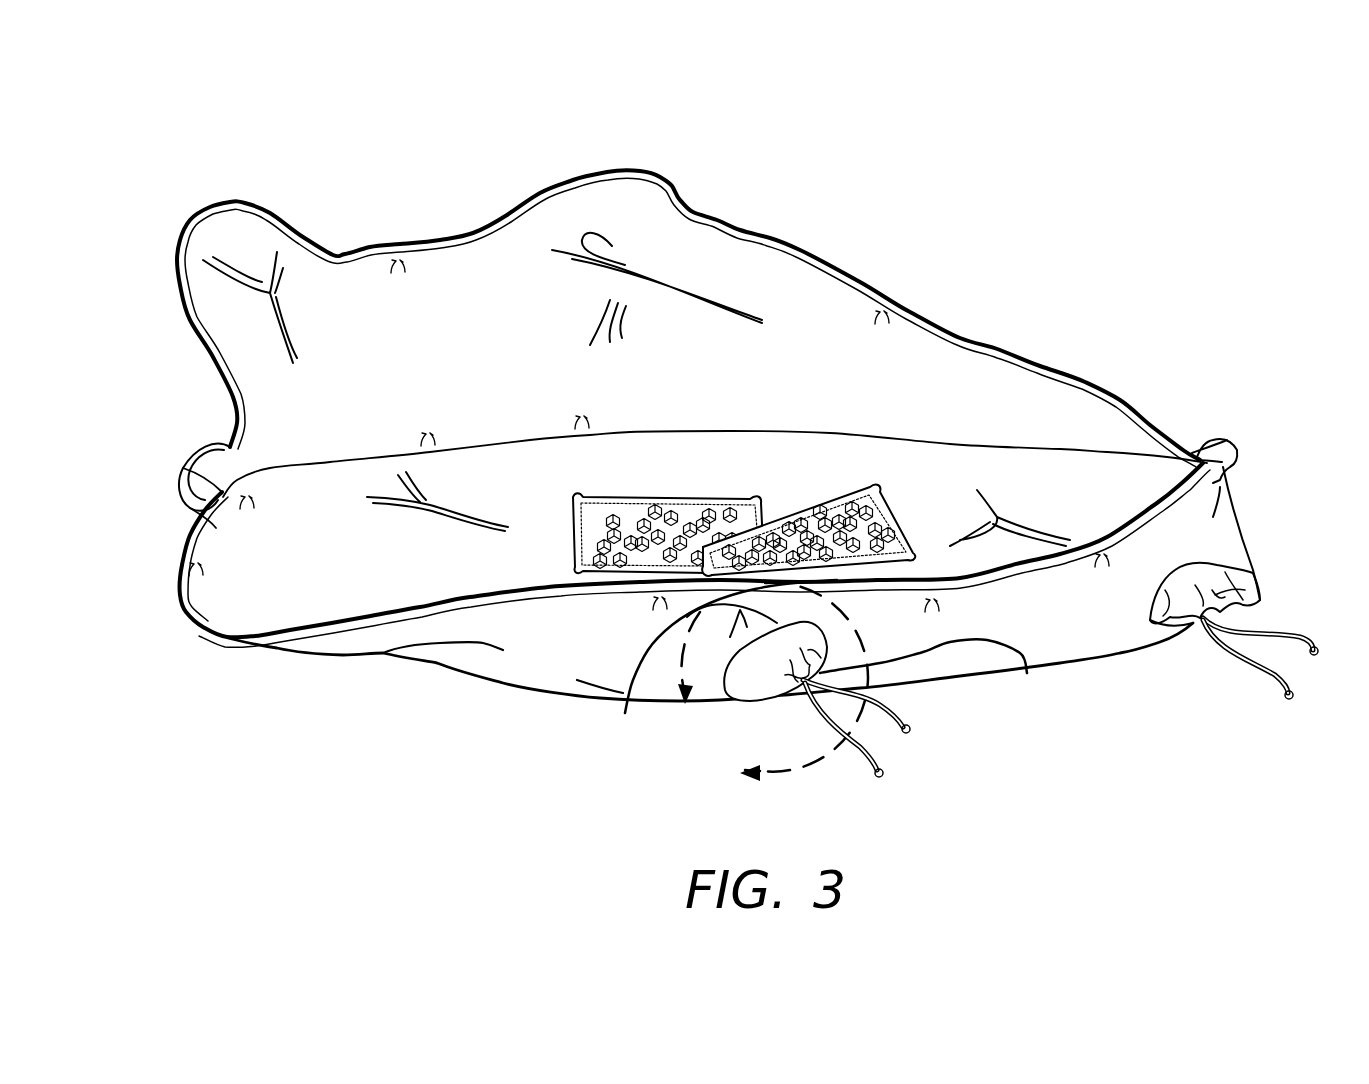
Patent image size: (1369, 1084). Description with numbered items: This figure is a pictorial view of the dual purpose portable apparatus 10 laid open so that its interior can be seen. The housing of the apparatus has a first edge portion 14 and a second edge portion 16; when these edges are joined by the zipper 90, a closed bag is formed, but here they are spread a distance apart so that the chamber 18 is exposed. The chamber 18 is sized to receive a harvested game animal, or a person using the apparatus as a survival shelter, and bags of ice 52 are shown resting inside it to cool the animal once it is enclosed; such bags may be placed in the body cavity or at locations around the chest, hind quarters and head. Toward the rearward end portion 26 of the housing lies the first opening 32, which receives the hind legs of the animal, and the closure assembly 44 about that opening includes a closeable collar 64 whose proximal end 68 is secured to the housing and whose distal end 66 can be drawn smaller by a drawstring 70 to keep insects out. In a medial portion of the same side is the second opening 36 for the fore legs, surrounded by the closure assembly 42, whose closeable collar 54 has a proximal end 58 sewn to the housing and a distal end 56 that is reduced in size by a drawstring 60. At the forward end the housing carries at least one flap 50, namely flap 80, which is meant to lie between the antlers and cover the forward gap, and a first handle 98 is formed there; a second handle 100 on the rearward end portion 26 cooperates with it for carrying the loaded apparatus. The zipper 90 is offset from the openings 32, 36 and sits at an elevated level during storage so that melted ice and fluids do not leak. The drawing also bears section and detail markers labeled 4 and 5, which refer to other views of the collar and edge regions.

The dual purpose portable apparatus 10 is at (1058, 230).
The first edge portion 14 is at (674, 198).
The second edge portion 16 is at (347, 627).
The chamber 18 is at (1030, 472).
The rearward end portion 26 is at (1230, 521).
The first opening 32 is at (1183, 630).
The second opening 36 is at (807, 678).
The closure assembly 42 is at (718, 709).
The closeable collar 54 is at (730, 697).
The closure assembly 44 is at (1256, 581).
The closeable collar 64 is at (1220, 582).
The flap 50 is at (156, 483).
The flap 80 is at (203, 483).
The bags of ice 52 is at (837, 503).
The distal end 56 is at (930, 672).
The proximal end 58 is at (720, 663).
The drawstring 60 is at (888, 748).
The distal end 66 is at (1233, 607).
The proximal end 68 is at (1227, 580).
The drawstring 70 is at (1282, 682).
The zipper 90 is at (370, 247).
The first handle 98 is at (203, 530).
The second handle 100 is at (1225, 440).
The FIG. 4 detail indicator 4 is at (731, 703).
The FIG. 5 section indicator 5 is at (877, 273).